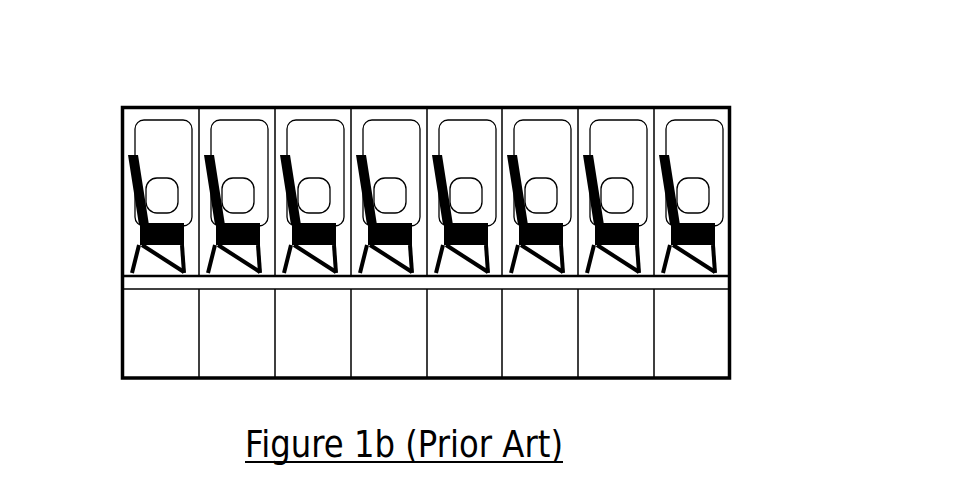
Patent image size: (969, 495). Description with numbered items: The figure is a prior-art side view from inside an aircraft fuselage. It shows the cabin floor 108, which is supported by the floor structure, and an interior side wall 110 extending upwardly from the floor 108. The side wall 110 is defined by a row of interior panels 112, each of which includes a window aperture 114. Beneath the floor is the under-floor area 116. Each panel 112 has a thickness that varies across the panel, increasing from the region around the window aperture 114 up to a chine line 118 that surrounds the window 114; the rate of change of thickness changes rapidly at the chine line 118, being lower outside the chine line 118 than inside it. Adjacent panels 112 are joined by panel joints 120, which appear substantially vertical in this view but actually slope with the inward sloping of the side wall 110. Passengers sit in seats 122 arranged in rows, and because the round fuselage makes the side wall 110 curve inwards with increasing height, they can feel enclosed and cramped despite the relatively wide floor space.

The cabin floor 108 is at (707, 285).
The interior side wall 110 is at (707, 143).
The interior panel 112 is at (377, 127).
The window aperture 114 is at (158, 197).
The under-floor area 116 is at (713, 362).
The chine line 118 is at (328, 118).
The panel joint 120 is at (205, 112).
The seat 122 is at (625, 272).